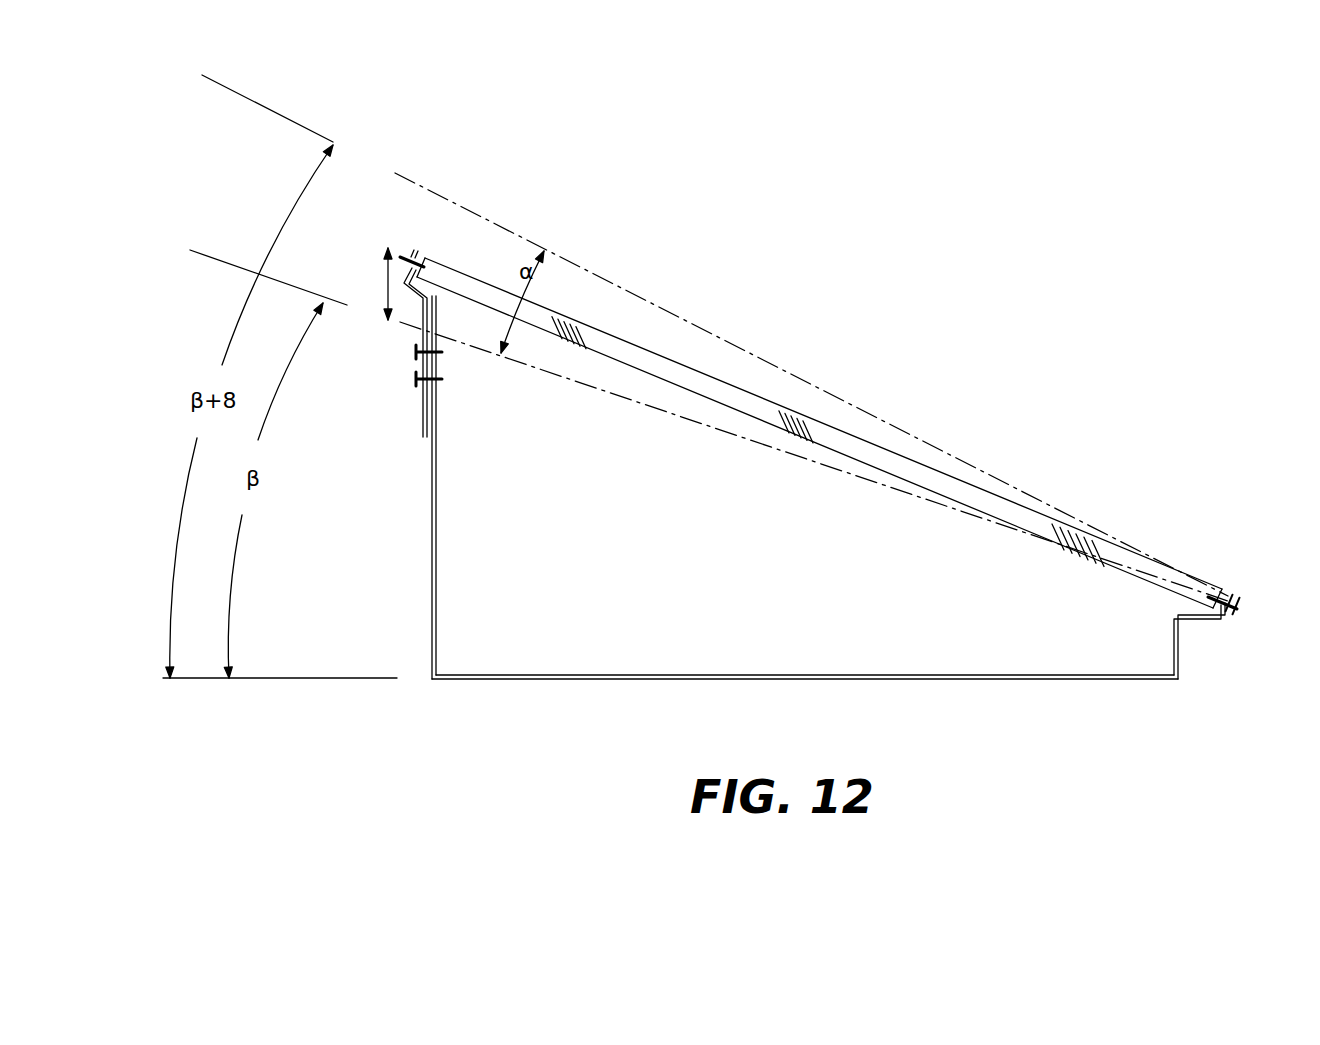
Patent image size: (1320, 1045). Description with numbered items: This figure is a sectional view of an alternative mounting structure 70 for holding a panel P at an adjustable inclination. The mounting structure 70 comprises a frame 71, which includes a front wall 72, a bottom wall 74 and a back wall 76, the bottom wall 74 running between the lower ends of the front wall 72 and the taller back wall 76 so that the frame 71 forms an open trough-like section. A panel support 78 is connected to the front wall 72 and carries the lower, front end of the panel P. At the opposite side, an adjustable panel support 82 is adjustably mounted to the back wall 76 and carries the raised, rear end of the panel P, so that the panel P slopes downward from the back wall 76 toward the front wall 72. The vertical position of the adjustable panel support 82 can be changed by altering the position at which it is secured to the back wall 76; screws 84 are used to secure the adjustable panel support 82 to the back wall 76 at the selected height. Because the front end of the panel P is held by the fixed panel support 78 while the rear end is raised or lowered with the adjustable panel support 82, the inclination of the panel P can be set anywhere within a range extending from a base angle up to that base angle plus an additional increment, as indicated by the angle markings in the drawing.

The mounting structure 70 is at (1184, 347).
The frame 71 is at (1131, 703).
The front wall 72 is at (1183, 643).
The bottom wall 74 is at (828, 680).
The back wall 76 is at (432, 527).
The panel support 78 is at (1222, 617).
The adjustable panel support 82 is at (415, 297).
The screws 84 is at (413, 352).
The panel P is at (722, 393).